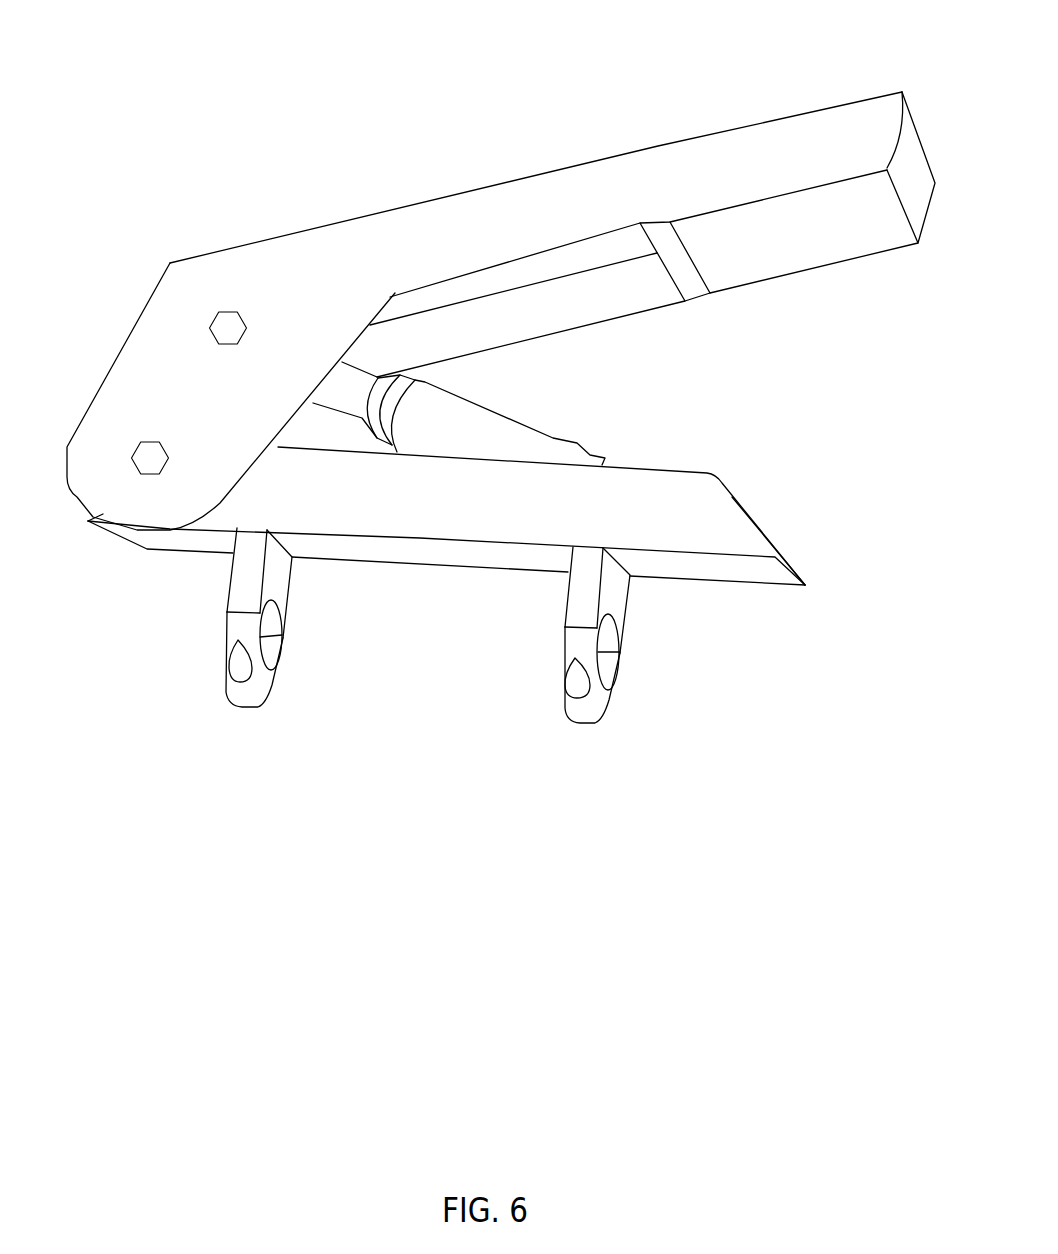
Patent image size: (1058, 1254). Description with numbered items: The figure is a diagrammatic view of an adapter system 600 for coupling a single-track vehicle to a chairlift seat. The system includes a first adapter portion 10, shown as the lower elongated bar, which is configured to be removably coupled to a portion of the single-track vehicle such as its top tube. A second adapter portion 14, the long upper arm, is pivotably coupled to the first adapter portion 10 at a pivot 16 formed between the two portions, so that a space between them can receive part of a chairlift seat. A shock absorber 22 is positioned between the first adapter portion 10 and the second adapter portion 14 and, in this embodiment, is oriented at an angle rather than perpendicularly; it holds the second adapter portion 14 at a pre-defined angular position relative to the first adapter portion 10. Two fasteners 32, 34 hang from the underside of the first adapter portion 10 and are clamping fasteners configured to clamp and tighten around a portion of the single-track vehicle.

The adapter system 600 is at (50, 32).
The first adapter portion 10 is at (746, 472).
The second adapter portion 14 is at (714, 364).
The pivot 16 is at (186, 421).
The shock absorber 22 is at (553, 419).
The fastener 32 is at (298, 733).
The fastener 34 is at (649, 751).